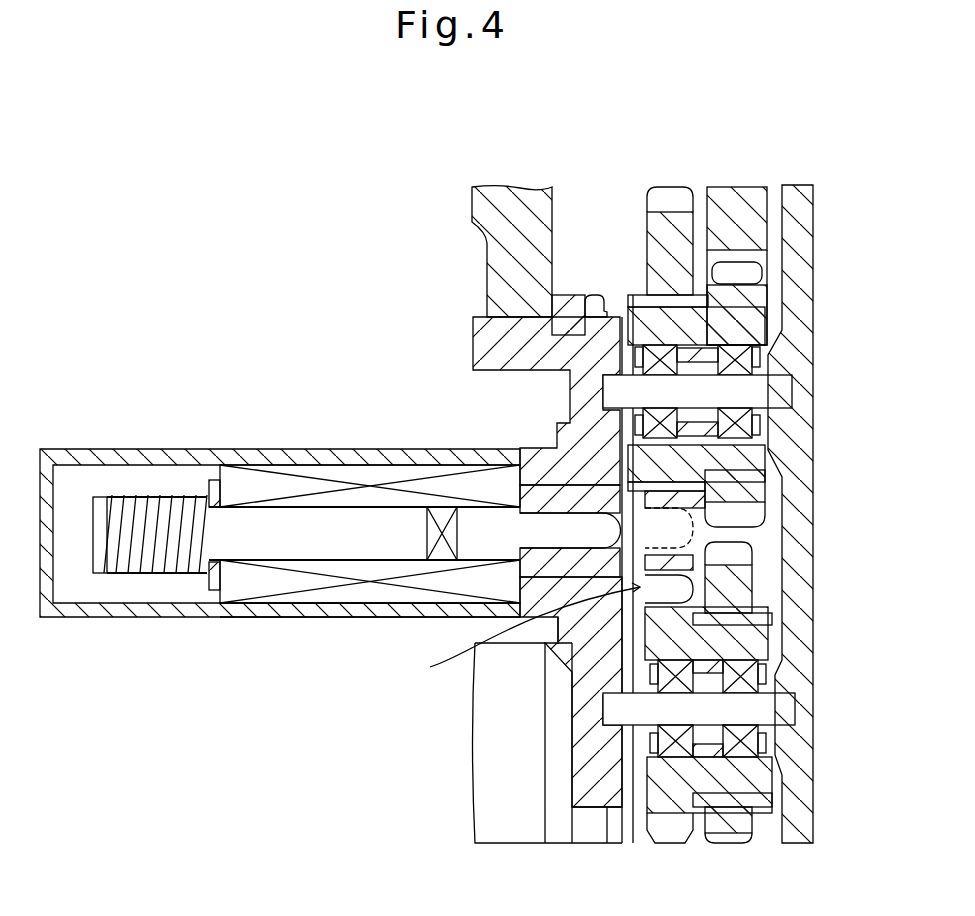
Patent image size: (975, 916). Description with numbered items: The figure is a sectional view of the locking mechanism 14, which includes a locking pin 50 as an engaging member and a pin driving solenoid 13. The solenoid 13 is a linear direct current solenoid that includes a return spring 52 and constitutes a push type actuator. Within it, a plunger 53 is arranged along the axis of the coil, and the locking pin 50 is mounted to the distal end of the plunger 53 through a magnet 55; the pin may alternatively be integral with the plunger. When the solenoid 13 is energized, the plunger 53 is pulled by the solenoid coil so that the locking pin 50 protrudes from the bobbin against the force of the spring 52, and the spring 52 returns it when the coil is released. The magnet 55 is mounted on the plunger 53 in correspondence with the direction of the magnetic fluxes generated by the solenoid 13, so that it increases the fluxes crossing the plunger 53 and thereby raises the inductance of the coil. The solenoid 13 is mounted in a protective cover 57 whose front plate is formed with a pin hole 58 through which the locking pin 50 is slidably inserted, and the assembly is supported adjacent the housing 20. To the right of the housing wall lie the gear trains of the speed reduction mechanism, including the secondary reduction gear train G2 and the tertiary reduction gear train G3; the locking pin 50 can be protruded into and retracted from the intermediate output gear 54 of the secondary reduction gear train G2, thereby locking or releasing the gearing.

The locking mechanism 14 is at (160, 449).
The pin driving solenoid 13 is at (285, 465).
The plunger 53 is at (340, 520).
The magnet 55 is at (437, 520).
The return spring 52 is at (126, 575).
The protective cover 57 is at (277, 617).
The locking pin 50 is at (500, 532).
The pin hole 58 is at (546, 500).
The housing 20 is at (485, 340).
The tertiary reduction gear train G3 is at (775, 276).
The intermediate output gear 54 is at (697, 532).
The secondary reduction gear train G2 is at (580, 616).